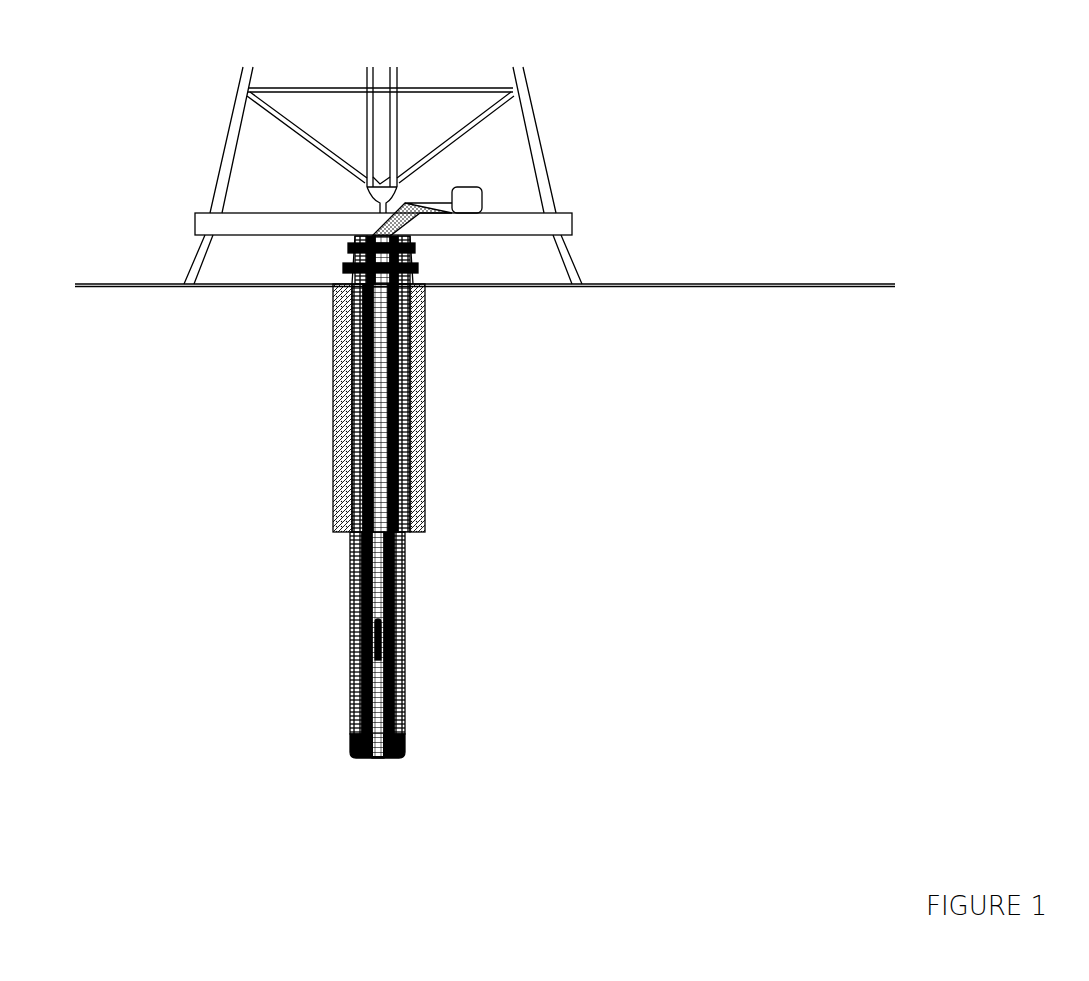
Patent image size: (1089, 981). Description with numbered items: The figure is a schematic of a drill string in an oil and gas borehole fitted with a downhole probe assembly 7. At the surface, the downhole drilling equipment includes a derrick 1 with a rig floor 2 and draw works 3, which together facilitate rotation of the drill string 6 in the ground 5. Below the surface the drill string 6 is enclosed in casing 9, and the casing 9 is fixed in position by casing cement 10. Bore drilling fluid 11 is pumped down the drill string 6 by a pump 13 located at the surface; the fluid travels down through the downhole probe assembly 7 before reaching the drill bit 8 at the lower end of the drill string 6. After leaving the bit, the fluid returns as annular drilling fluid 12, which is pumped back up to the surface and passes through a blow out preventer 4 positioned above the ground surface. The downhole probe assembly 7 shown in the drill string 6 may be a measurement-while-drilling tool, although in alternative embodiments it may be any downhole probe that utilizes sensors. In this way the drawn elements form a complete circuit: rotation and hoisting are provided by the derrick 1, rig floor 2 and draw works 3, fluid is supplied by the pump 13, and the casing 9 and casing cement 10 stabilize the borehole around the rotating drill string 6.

The derrick 1 is at (225, 145).
The rig floor 2 is at (247, 212).
The draw works 3 is at (363, 188).
The blow out preventer (BOP) 4 is at (350, 253).
The ground 5 is at (102, 283).
The drill string 6 is at (360, 508).
The downhole probe assembly 7 is at (370, 628).
The drill bit 8 is at (348, 755).
The casing 9 is at (340, 440).
The casing cement 10 is at (337, 385).
The bore drilling fluid 11 is at (375, 563).
The annular drilling fluid 12 is at (355, 538).
The pump 13 is at (487, 185).